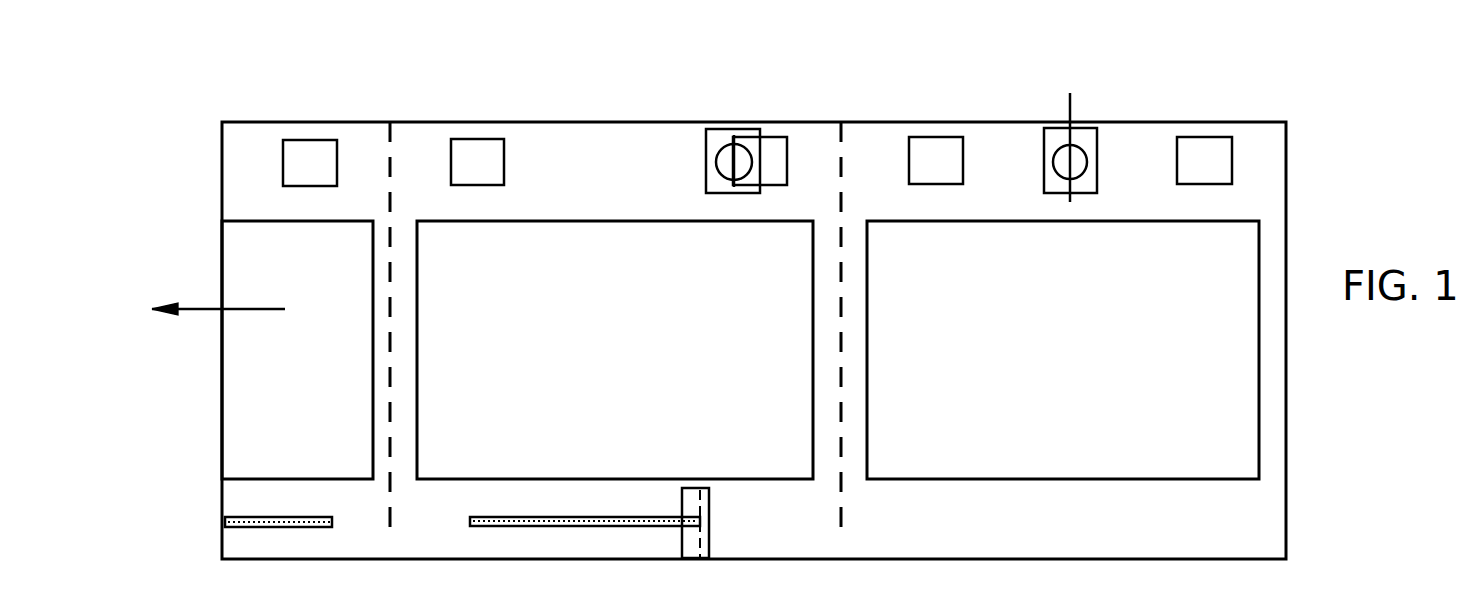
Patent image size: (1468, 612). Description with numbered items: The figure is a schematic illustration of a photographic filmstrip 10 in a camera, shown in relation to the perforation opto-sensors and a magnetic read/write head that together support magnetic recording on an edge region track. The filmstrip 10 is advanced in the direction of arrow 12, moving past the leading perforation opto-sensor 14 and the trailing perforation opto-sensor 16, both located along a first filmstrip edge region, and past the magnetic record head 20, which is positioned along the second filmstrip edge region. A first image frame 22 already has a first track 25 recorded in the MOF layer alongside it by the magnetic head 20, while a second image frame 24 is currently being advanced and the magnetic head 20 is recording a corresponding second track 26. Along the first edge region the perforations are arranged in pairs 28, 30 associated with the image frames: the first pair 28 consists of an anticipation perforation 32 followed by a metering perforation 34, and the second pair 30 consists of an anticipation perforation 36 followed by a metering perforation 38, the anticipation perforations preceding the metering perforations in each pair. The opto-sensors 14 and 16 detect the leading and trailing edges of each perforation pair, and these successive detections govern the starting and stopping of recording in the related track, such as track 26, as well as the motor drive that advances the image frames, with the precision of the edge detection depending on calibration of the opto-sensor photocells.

The filmstrip 10 is at (1036, 85).
The arrow 12 is at (188, 308).
The leading perforation opto-sensor 14 is at (1085, 130).
The trailing perforation opto-sensor 16 is at (752, 130).
The magnetic record head 20 is at (708, 535).
The first image frame 22 is at (238, 447).
The second image frame 24 is at (597, 230).
The first track 25 is at (277, 528).
The second track 26 is at (617, 527).
The perforation pair 28 is at (433, 58).
The perforation pair 30 is at (883, 57).
The anticipation perforation 32 is at (788, 148).
The metering perforation 34 is at (488, 138).
The anticipation perforation 36 is at (1222, 137).
The metering perforation 38 is at (940, 137).